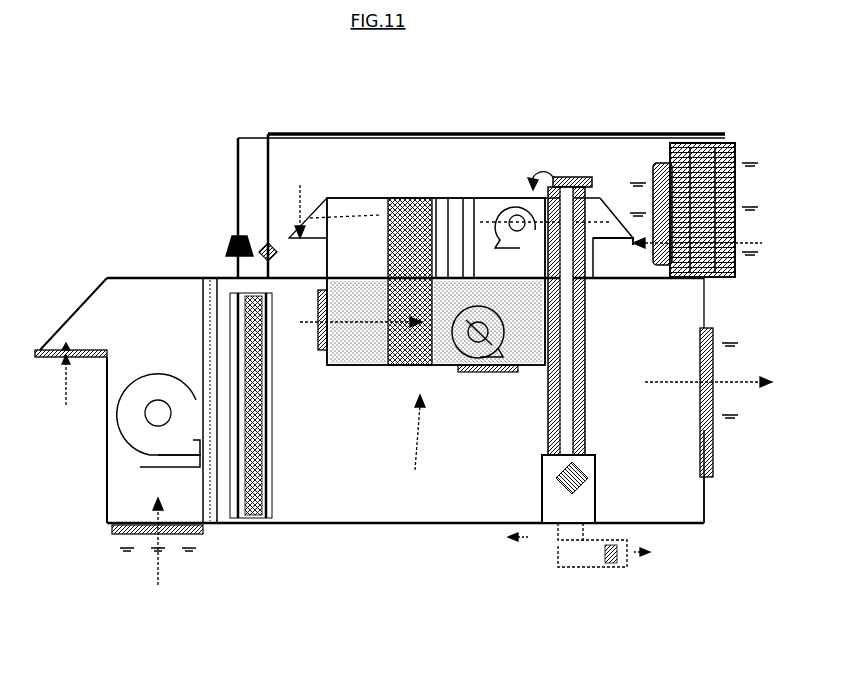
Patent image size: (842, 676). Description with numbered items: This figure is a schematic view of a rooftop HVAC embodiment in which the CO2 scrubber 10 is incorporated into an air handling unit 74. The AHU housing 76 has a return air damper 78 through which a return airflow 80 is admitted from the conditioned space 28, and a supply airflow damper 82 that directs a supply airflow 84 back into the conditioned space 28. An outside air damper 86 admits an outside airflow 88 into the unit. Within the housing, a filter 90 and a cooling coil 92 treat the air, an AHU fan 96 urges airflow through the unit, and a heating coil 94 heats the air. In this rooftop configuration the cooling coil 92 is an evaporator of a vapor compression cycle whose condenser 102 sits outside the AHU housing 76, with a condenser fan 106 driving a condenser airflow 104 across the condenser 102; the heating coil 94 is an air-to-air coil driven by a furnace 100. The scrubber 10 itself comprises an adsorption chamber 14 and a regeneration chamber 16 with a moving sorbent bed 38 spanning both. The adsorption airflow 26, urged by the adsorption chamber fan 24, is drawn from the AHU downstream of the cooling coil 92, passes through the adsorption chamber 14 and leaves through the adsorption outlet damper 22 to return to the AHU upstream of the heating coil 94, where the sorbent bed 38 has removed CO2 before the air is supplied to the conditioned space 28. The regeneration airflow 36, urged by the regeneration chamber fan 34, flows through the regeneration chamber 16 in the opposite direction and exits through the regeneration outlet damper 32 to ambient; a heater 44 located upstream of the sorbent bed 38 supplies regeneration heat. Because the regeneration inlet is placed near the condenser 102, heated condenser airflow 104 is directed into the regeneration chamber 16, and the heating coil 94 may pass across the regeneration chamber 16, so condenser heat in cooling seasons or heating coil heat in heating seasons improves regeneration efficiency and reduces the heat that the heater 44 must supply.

The carbon dioxide scrubber 10 is at (461, 344).
The adsorption chamber 14 is at (436, 321).
The regeneration chamber 16 is at (436, 238).
The adsorption outlet damper 22 is at (323, 351).
The adsorption airflow 26 is at (362, 326).
The adsorption chamber fan 24 is at (473, 373).
The conditioned space 28 is at (546, 468).
The regeneration outlet damper 32 is at (610, 248).
The regeneration chamber fan 34 is at (298, 199).
The regeneration airflow 36 is at (546, 212).
The sorbent bed 38 is at (410, 281).
The heater 44 is at (462, 198).
The air handling unit 74 is at (128, 226).
The AHU housing 76 is at (414, 526).
The return air damper 78 is at (113, 528).
The return airflow 80 is at (159, 552).
The supply airflow damper 82 is at (710, 480).
The supply airflow 84 is at (727, 396).
The outside air damper 86 is at (40, 349).
The outside airflow 88 is at (64, 387).
The filter 90 is at (213, 370).
The cooling coil 92 is at (275, 403).
The heating coil 94 is at (566, 382).
The AHU fan 96 is at (158, 420).
The furnace 100 is at (583, 486).
The condenser 102 is at (723, 272).
The condenser airflow 104 is at (743, 244).
The condenser fan 106 is at (656, 170).